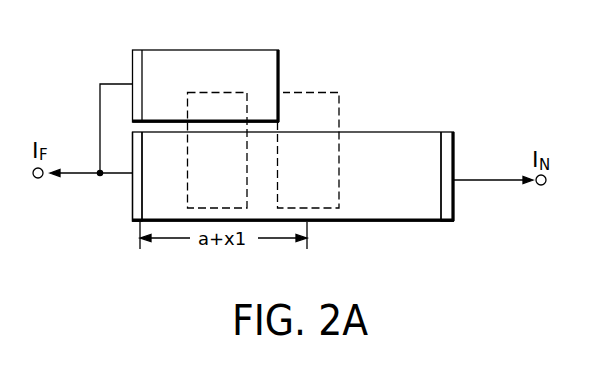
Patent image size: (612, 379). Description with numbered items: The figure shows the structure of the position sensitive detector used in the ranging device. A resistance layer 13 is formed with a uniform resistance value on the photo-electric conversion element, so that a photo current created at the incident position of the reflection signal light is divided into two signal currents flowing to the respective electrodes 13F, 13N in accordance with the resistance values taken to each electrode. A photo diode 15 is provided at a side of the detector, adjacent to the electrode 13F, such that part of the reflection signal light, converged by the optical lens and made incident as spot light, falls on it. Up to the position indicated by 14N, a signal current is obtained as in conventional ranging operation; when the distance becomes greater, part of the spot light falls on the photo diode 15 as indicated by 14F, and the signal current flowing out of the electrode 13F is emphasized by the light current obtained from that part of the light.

The resistance layer 13 is at (391, 222).
The electrode 13F is at (128, 207).
The electrode 13N is at (451, 208).
The far spot light position 14F is at (217, 92).
The near spot light position 14N is at (339, 93).
The photo diode 15 is at (252, 50).